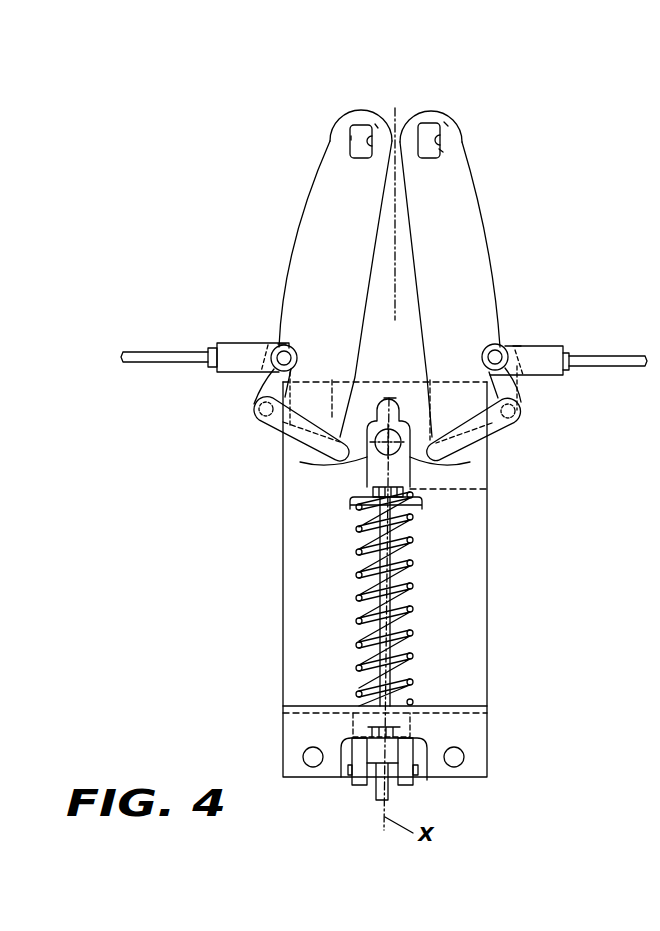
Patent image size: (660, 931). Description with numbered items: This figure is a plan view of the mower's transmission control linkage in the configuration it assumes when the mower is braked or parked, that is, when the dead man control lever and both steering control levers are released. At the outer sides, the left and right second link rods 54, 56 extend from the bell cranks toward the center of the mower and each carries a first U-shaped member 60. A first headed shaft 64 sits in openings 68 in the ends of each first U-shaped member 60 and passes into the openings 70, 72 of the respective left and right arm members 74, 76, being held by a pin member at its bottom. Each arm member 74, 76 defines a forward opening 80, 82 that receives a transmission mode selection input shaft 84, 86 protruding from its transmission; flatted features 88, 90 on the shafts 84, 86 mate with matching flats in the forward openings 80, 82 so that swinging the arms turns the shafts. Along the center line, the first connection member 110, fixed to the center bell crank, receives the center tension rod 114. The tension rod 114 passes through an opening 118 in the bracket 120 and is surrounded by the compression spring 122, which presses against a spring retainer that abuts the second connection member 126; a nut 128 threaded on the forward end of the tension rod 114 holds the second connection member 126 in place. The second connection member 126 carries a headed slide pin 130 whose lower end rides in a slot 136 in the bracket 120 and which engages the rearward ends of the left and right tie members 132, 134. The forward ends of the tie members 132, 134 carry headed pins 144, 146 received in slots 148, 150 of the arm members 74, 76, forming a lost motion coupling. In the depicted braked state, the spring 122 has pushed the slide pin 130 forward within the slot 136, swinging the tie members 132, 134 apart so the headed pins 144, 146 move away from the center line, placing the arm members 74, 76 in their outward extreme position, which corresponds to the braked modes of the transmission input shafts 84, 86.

The left second link rod 54 is at (171, 352).
The right second link rod 56 is at (598, 357).
The first U-shaped member 60 is at (240, 342).
The first headed shaft 64 is at (277, 347).
The opening in first U-shaped member 68 is at (281, 344).
The opening in left arm member 70 is at (261, 377).
The opening in right arm member 72 is at (503, 365).
The left arm member 74 is at (315, 197).
The right arm member 76 is at (478, 205).
The forward opening of left arm member 80 is at (351, 138).
The forward opening of right arm member 82 is at (446, 123).
The transmission mode selection input shaft 84 is at (360, 124).
The transmission mode selection input shaft 86 is at (429, 124).
The flatted feature 88 is at (376, 124).
The flatted feature 90 is at (441, 150).
The first connection member 110 is at (360, 787).
The center tension rod 114 is at (413, 669).
The opening in bracket 118 is at (428, 765).
The bracket 120 is at (286, 733).
The compression spring 122 is at (359, 645).
The second connection member 126 is at (368, 462).
The nut 128 is at (487, 489).
The headed slide pin 130 is at (378, 470).
The left tie member 132 is at (324, 423).
The right tie member 134 is at (451, 423).
The slot in bracket 136 is at (390, 398).
The headed pin 144 is at (252, 420).
The headed pin 146 is at (524, 421).
The slot in left arm member 148 is at (348, 456).
The slot in right arm member 150 is at (465, 455).